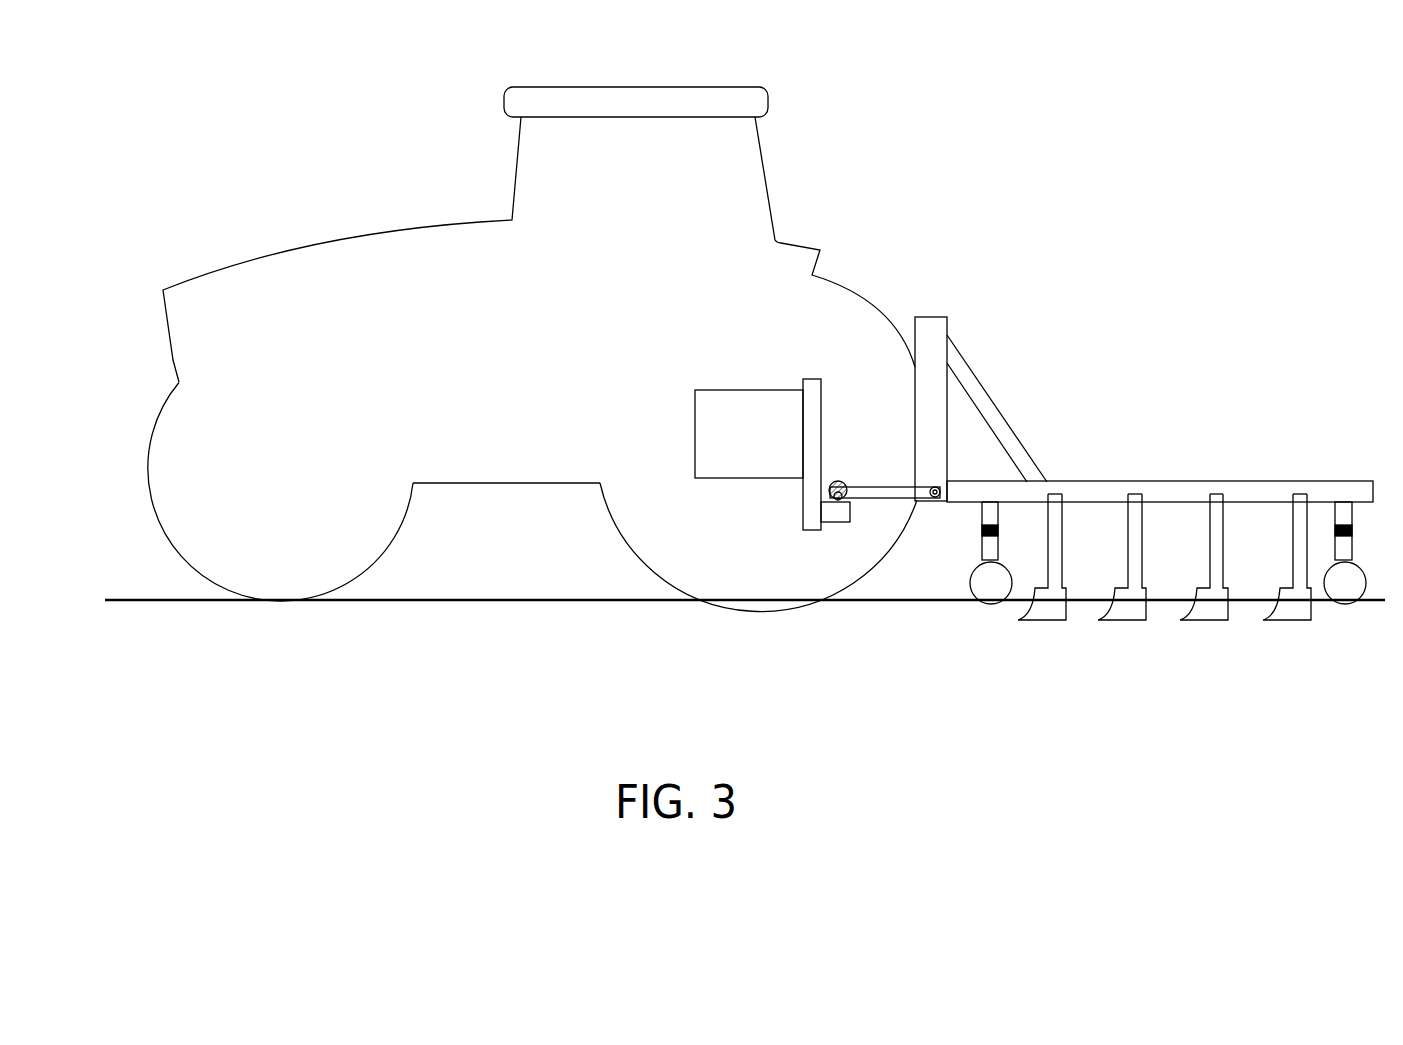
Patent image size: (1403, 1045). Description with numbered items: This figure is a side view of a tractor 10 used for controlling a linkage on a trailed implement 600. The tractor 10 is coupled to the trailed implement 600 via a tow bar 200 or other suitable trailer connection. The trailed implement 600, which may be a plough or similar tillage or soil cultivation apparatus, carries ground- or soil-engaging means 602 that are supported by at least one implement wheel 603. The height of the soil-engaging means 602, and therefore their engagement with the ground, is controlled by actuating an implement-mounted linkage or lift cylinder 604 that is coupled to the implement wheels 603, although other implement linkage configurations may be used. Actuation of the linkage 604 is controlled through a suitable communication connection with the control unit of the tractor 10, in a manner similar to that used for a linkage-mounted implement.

The tractor 10 is at (332, 160).
The tow bar 200 is at (880, 493).
The trailed implement 600 is at (1120, 492).
The soil-engaging means 602 is at (1133, 620).
The implement wheel 603 is at (992, 590).
The implement-mounted linkage or lift cylinder 604 is at (990, 513).